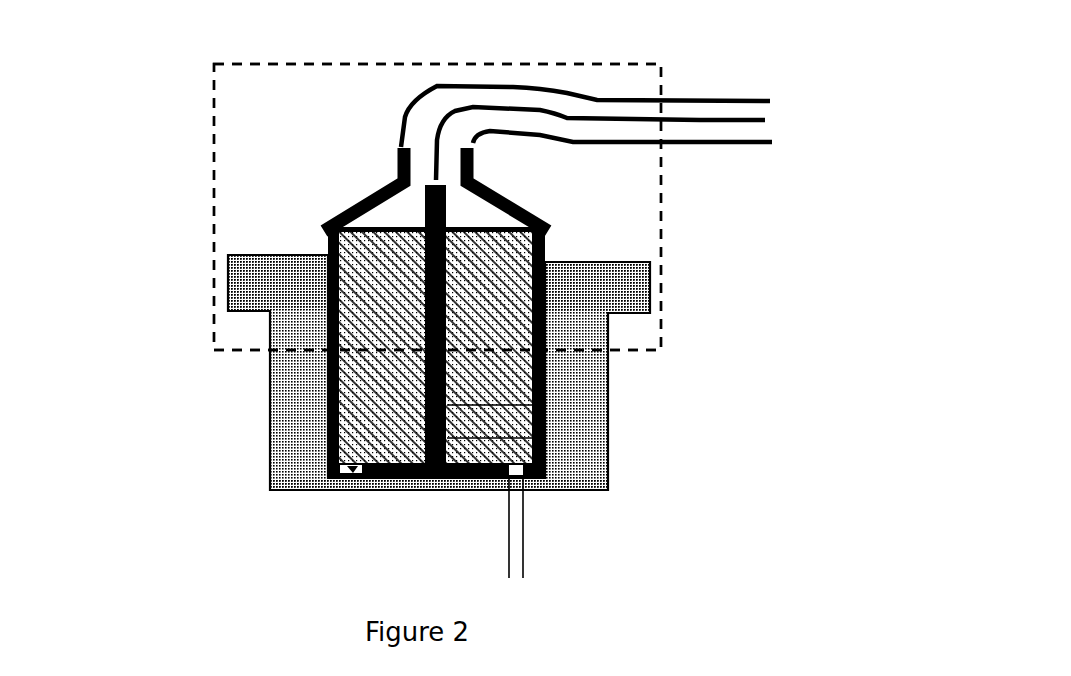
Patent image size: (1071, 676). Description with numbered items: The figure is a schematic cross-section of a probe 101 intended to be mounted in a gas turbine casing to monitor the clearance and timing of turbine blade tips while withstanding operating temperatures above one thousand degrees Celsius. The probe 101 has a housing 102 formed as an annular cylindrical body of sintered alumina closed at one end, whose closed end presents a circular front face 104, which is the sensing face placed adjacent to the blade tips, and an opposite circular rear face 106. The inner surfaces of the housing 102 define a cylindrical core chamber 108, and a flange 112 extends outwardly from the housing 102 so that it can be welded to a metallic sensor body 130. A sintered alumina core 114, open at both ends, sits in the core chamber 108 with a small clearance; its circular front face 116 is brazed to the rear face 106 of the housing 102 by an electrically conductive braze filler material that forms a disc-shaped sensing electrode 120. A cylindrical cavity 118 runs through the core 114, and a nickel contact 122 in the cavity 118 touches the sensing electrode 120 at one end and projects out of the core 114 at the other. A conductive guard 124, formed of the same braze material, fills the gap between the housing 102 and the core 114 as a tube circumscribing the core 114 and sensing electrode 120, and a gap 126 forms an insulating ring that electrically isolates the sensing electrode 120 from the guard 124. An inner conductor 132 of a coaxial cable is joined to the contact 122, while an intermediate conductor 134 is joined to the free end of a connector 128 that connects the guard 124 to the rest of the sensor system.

The probe 101 is at (308, 154).
The housing 102 is at (284, 446).
The front face 104 is at (292, 492).
The rear face 106 is at (357, 470).
The core chamber 108 is at (314, 375).
The flange 112 is at (245, 288).
The core 114 is at (495, 373).
The front face of the core 116 is at (351, 472).
The cavity 118 is at (532, 405).
The sensing electrode 120 is at (408, 482).
The contact 122 is at (532, 438).
The guard 124 is at (330, 411).
The gap 126 is at (470, 544).
The connector 128 is at (336, 204).
The sensor body 130 is at (661, 229).
The inner conductor 132 is at (765, 119).
The intermediate conductor 134 is at (697, 100).